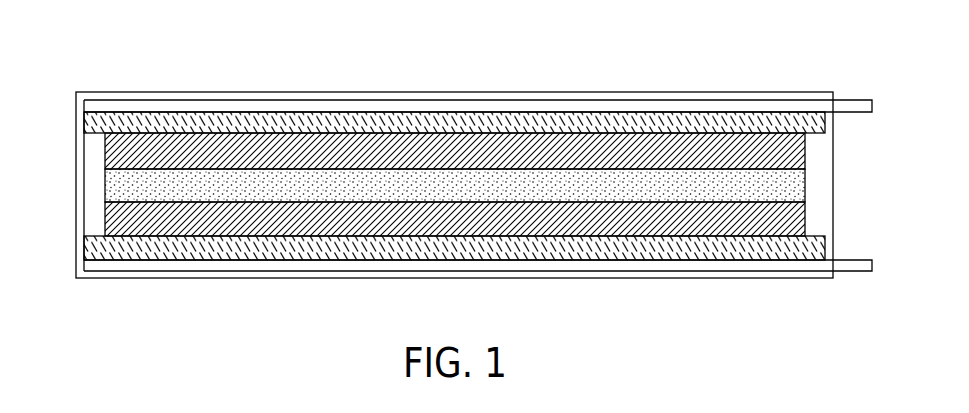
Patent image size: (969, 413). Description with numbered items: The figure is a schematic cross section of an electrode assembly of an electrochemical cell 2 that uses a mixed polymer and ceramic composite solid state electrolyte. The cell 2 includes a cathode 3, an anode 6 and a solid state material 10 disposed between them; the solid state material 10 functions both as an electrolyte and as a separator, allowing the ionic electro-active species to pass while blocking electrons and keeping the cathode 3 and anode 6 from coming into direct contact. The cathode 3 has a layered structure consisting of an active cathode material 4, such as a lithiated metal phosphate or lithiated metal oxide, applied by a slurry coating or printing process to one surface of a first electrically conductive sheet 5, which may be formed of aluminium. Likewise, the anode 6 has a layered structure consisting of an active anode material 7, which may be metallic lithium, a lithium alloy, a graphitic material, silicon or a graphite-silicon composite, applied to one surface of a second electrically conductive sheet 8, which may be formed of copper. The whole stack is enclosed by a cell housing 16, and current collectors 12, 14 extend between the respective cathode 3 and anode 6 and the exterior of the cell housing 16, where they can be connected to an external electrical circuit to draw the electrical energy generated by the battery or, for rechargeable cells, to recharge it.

The electrochemical cell 2 is at (293, 29).
The cathode 3 is at (454, 97).
The active cathode material 4 is at (480, 152).
The first electrically conductive sheet 5 is at (455, 130).
The anode 6 is at (454, 276).
The active anode material 7 is at (288, 228).
The second electrically conductive sheet 8 is at (315, 250).
The solid state material 10 is at (798, 186).
The current collector 12 is at (708, 107).
The current collector 14 is at (709, 263).
The cell housing 16 is at (77, 251).